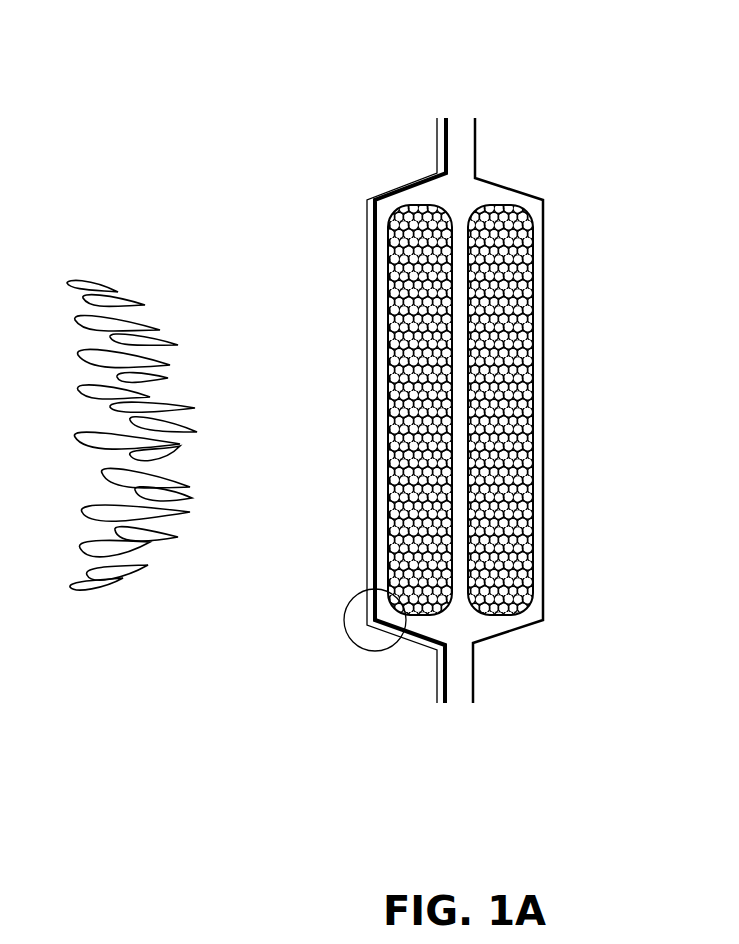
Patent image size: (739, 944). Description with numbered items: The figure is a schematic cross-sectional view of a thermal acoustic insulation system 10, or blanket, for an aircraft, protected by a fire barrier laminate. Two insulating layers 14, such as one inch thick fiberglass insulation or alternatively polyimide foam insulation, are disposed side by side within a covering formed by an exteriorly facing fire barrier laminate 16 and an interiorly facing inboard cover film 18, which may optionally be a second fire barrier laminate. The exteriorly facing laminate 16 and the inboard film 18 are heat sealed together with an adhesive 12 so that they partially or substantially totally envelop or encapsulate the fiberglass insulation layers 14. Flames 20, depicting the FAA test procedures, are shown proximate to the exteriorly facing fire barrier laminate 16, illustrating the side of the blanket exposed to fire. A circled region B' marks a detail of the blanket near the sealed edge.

The thermal acoustic insulation system 10 is at (459, 385).
The adhesive 12 is at (457, 697).
The insulating layers 14 is at (388, 460).
The fire barrier laminate 16 is at (428, 173).
The inboard cover film 18 is at (542, 625).
The flames 20 is at (150, 578).
The detail region B' is at (270, 669).